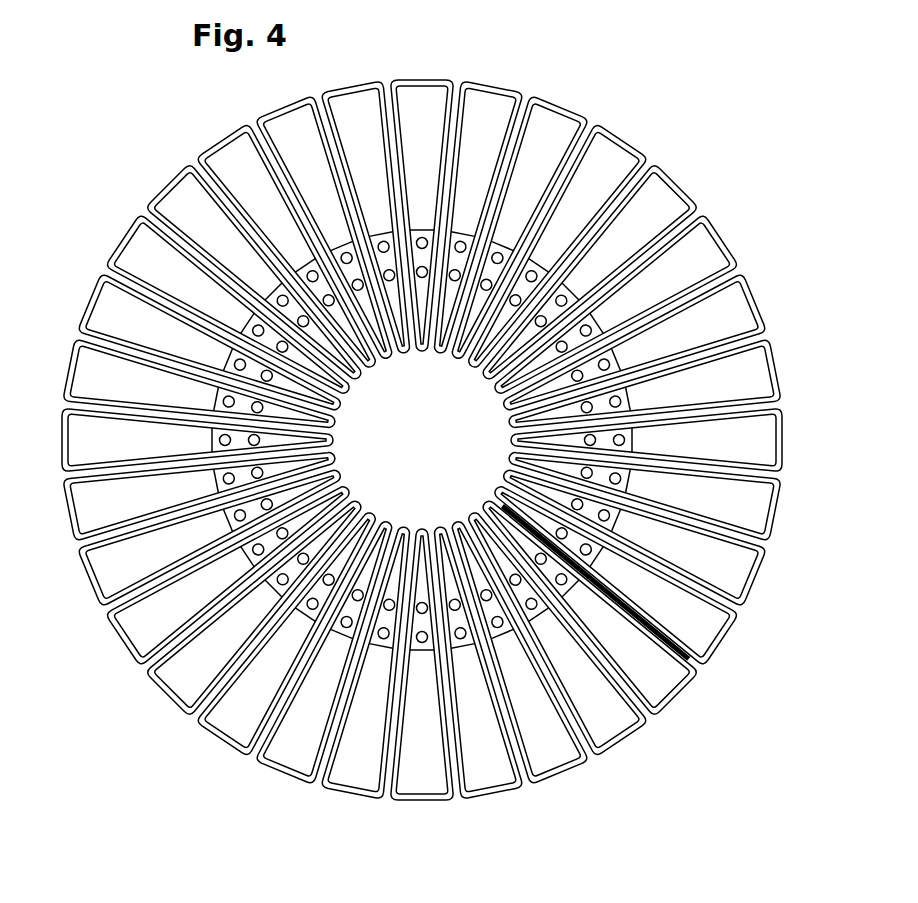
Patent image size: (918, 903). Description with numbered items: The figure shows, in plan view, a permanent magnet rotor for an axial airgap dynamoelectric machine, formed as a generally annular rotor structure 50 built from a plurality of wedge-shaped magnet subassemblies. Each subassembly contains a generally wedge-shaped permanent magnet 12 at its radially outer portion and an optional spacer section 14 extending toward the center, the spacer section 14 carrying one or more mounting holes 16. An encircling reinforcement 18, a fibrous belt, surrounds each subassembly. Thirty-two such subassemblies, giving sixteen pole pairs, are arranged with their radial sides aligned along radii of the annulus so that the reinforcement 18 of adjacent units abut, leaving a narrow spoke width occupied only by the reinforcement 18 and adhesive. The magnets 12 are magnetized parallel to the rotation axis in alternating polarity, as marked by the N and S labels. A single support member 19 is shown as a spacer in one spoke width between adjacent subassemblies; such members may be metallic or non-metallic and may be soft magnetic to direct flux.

The permanent magnet 12 is at (580, 200).
The spacer section 14 is at (528, 332).
The mounting holes 16 is at (519, 297).
The encircling reinforcement 18 is at (563, 101).
The support member 19 is at (603, 587).
The annular rotor structure 50 is at (137, 713).